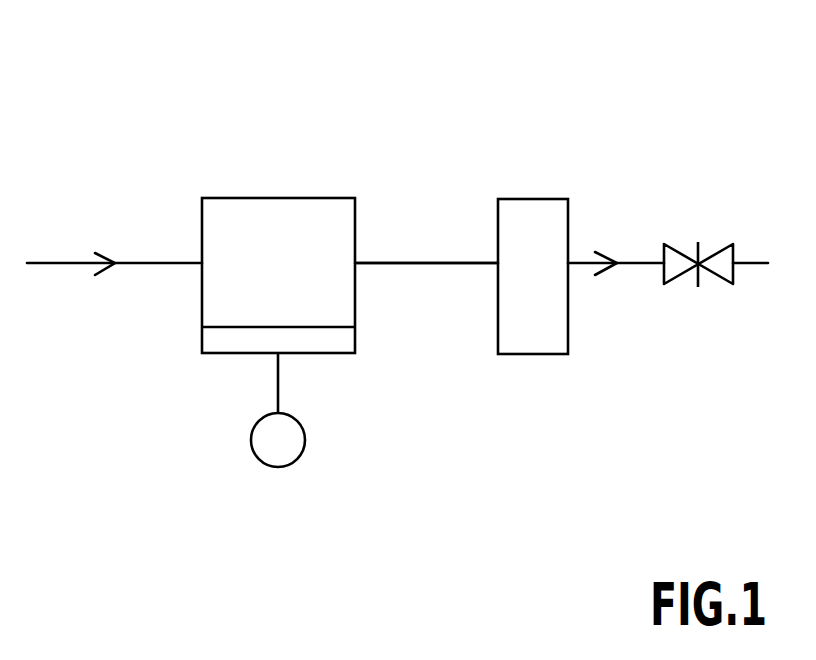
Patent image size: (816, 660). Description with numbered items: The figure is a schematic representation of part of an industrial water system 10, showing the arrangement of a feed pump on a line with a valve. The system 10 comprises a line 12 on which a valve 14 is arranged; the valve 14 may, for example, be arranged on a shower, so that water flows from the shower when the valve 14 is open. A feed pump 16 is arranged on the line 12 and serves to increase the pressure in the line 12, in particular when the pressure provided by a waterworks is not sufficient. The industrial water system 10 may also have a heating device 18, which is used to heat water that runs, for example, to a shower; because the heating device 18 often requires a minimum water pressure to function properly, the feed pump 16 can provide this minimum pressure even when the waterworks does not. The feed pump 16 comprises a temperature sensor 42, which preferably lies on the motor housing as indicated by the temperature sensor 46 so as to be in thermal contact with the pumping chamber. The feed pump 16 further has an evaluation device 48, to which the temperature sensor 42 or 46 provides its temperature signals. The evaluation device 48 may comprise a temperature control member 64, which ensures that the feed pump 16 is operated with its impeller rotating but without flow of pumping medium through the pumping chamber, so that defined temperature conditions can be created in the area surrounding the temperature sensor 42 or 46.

The industrial water system 10 is at (583, 122).
The line 12 is at (415, 263).
The valve 14 is at (676, 269).
The feed pump 16 is at (262, 212).
The heating device 18 is at (522, 335).
The temperature sensor 42 is at (316, 467).
The temperature sensor 46 is at (288, 458).
The evaluation device 48 is at (247, 342).
The temperature control member 64 is at (319, 342).